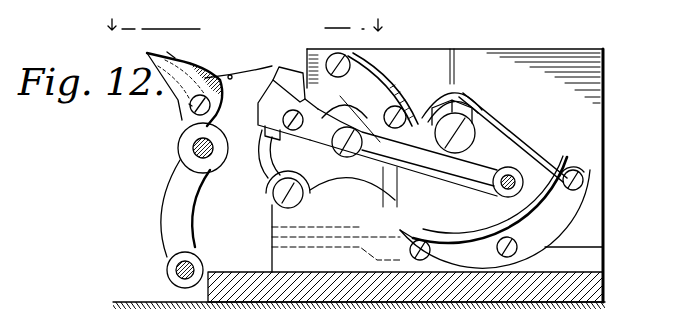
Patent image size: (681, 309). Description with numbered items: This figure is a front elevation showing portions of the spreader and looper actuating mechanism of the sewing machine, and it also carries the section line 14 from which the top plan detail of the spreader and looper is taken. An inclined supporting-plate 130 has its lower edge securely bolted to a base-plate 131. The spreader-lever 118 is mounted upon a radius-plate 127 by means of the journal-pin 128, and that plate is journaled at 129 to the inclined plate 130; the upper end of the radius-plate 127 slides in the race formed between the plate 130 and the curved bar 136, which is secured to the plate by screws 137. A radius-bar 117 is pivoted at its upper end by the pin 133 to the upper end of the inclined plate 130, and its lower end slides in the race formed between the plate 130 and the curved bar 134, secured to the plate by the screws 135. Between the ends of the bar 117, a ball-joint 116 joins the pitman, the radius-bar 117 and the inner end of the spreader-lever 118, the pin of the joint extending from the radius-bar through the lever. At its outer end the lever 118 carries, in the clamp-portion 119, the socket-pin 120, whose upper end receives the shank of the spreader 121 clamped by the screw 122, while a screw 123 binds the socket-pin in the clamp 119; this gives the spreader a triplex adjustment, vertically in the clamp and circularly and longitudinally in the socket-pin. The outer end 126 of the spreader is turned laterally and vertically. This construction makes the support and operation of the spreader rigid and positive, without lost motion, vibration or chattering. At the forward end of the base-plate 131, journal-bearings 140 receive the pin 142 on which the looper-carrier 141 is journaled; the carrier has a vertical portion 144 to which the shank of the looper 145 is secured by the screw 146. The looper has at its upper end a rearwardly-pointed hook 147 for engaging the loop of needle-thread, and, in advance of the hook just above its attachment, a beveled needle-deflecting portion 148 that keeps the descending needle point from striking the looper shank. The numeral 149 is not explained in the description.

The section line 14- 14 is at (238, 27).
The ball-joint 116 is at (517, 153).
The radius-bar 117 is at (497, 131).
The spreader-lever 118 is at (448, 170).
The clamp-portion 119 is at (283, 140).
The socket-pin 120 is at (266, 136).
The spreader 121 is at (262, 88).
The screw 122 is at (280, 70).
The screw 123 is at (283, 120).
The outer end of spreader 126 is at (147, 55).
The radius-plate 127 is at (328, 177).
The journal-pin 128 is at (340, 148).
The journal 129 is at (275, 198).
The inclined supporting-plate 130 is at (588, 142).
The base-plate 131 is at (596, 292).
The pin 133 is at (457, 127).
The curved bar 134 is at (572, 212).
The screws 135 is at (583, 181).
The curved bar 136 is at (372, 80).
The screws 137 is at (392, 104).
The journal-bearings 140 is at (175, 290).
The looper-carrier 141 is at (160, 198).
The pin 142 is at (176, 268).
The vertical portion 144 is at (178, 134).
The looper 145 is at (176, 94).
The screw 146 is at (189, 104).
The rearwardly-pointed hook 147 is at (167, 52).
The beveled needle-deflecting portion 148 is at (202, 72).
The pin 149 is at (193, 150).